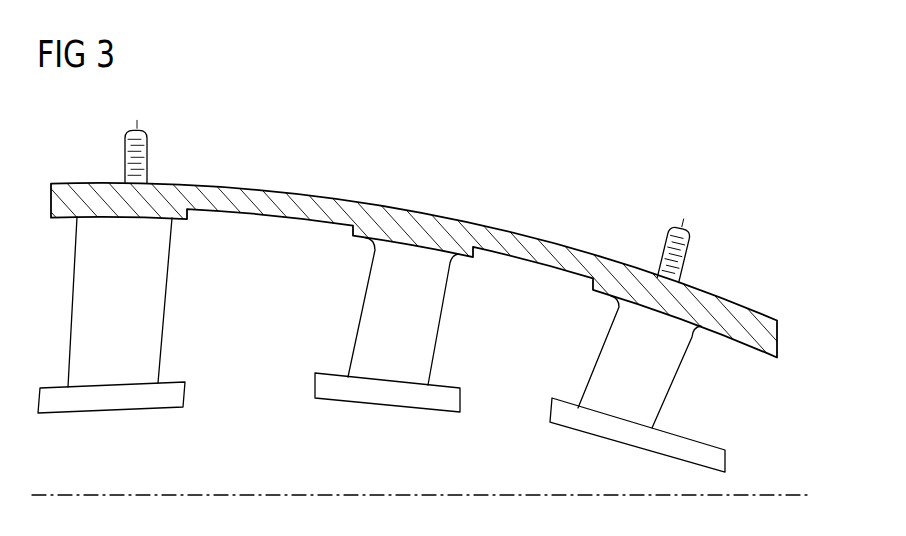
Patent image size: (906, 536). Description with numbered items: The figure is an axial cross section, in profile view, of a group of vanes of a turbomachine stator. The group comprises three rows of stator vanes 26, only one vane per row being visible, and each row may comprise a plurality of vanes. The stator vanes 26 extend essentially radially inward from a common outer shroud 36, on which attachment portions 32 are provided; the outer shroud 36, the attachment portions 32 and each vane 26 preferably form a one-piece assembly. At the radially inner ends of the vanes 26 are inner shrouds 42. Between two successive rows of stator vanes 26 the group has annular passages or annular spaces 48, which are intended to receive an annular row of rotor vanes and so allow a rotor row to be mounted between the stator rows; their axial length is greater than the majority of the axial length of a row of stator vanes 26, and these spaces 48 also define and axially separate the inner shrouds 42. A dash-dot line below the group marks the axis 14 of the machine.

The machine axis 14 is at (252, 494).
The stator vanes 26 is at (136, 315).
The attachment portions 32 is at (143, 152).
The outer shroud 36 is at (387, 220).
The inner shrouds 42 is at (112, 402).
The annular passages 48 is at (263, 317).